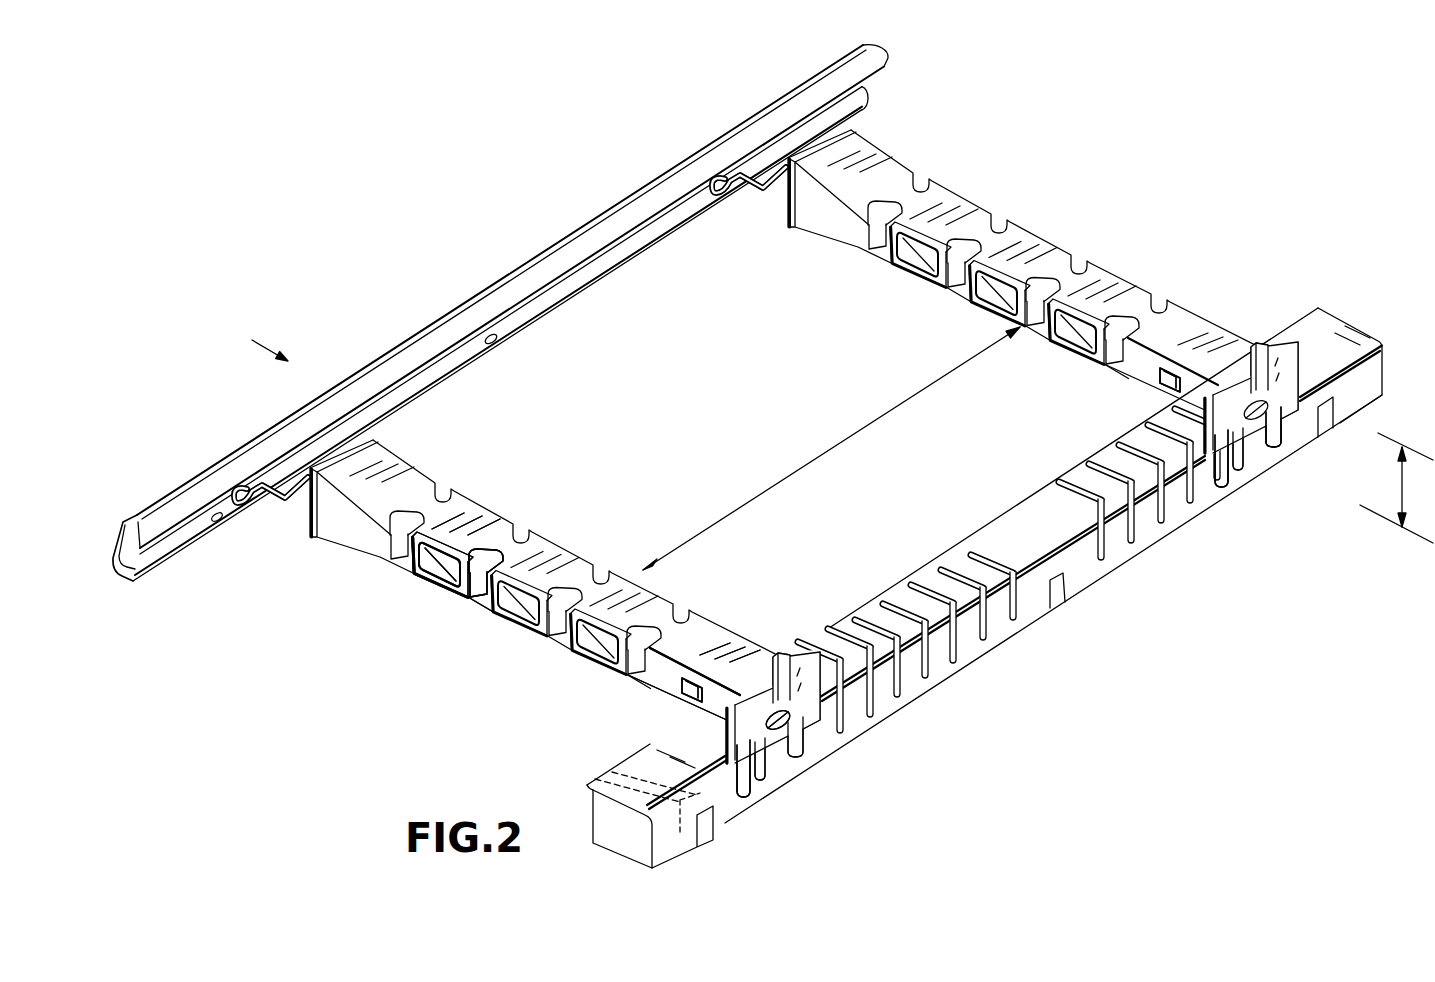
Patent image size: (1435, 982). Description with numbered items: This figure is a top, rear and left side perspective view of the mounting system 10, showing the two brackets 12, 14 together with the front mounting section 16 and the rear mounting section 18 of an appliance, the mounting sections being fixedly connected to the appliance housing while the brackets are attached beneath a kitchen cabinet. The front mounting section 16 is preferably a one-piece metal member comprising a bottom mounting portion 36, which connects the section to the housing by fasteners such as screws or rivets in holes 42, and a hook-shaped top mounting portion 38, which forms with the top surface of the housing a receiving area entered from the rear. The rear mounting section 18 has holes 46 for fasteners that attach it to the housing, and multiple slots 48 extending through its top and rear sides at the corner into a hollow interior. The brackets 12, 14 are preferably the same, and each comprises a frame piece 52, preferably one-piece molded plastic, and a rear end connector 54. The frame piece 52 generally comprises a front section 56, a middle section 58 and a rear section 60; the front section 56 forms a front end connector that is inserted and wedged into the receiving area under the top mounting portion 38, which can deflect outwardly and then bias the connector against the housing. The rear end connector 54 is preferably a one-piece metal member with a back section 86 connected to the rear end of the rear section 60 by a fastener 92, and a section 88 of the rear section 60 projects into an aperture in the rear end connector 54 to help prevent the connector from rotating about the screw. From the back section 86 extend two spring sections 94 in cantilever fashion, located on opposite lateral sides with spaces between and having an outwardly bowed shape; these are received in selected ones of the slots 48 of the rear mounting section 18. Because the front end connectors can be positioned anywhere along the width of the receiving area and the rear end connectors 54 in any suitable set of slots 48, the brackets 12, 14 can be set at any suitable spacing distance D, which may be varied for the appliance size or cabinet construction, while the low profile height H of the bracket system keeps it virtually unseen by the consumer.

The mounting system 10 is at (253, 344).
The bracket 12 is at (577, 547).
The bracket 14 is at (1065, 237).
The front mounting section 16 is at (625, 263).
The rear mounting section 18 is at (1078, 587).
The bottom mounting portion 36 is at (137, 582).
The top mounting portion 38 is at (380, 365).
The holes 42 is at (224, 519).
The holes 46 is at (594, 807).
The slots 48 is at (967, 577).
The frame piece 52 is at (463, 593).
The rear end connector 54 is at (780, 753).
The front section 56 is at (287, 503).
The middle section 58 is at (500, 512).
The rear section 60 is at (745, 633).
The back section 86 is at (745, 746).
The section of the rear section 88 is at (690, 704).
The fastener 92 is at (800, 743).
The spring sections 94 is at (1287, 447).
The spacing distance D is at (855, 437).
The height H is at (1406, 490).